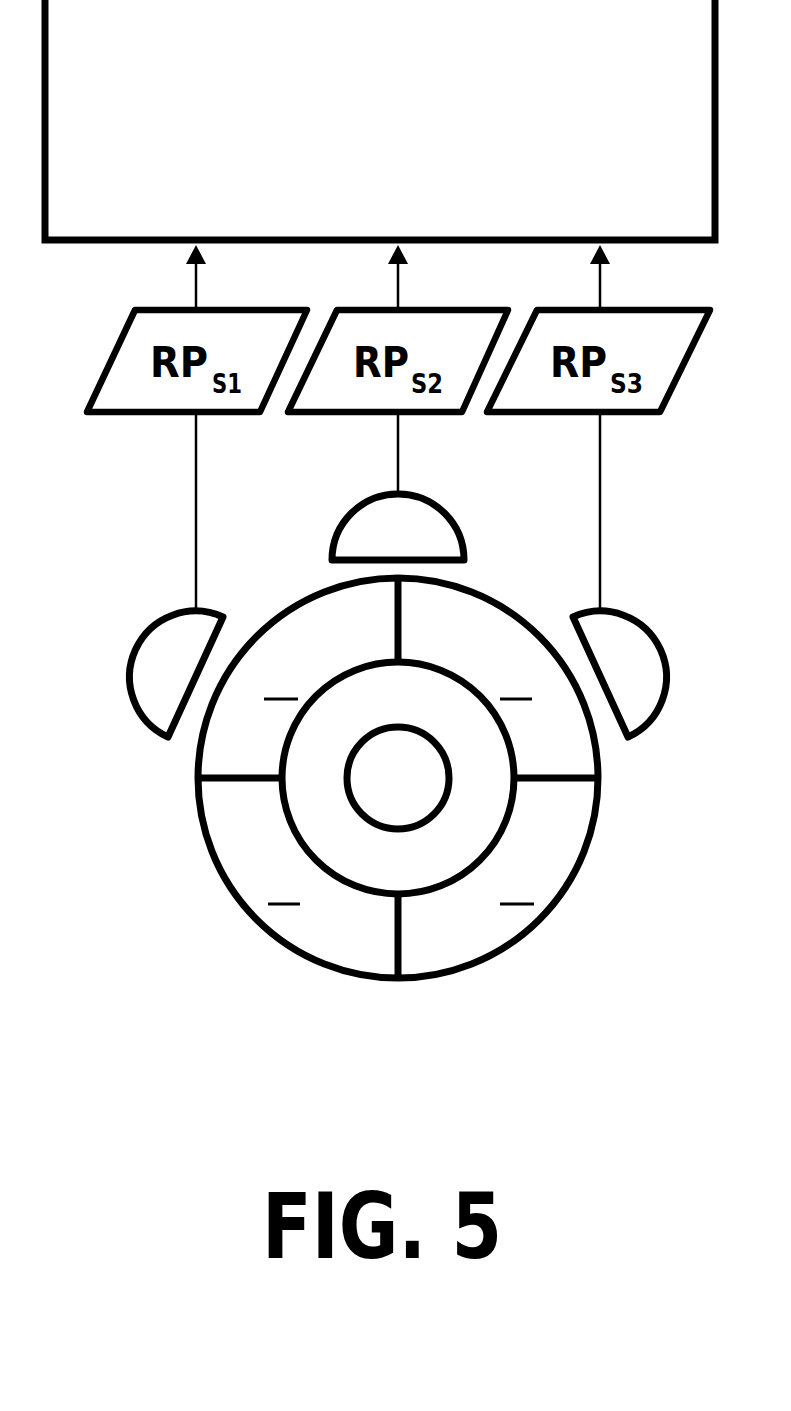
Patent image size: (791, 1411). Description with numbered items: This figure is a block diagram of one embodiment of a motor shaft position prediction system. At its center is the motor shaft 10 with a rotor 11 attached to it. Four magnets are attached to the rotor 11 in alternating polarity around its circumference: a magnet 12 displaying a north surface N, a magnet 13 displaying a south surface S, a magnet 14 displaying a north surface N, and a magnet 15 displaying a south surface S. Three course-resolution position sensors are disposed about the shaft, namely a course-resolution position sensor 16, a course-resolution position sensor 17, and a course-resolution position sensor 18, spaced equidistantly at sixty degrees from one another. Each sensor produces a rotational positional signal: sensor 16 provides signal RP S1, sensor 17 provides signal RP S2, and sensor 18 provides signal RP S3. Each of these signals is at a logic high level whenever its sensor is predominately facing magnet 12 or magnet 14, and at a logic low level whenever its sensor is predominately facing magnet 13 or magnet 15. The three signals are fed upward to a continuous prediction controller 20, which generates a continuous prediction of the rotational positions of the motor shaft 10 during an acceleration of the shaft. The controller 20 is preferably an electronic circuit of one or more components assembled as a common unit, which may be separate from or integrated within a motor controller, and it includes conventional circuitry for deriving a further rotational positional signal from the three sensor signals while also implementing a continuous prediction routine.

The motor shaft 10 is at (374, 803).
The rotor 11 is at (371, 720).
The magnet 12 is at (285, 612).
The magnet 13 is at (515, 610).
The magnet 14 is at (555, 903).
The magnet 15 is at (240, 903).
The course-resolution position sensor 16 is at (128, 647).
The course-resolution position sensor 17 is at (342, 517).
The course-resolution position sensor 18 is at (668, 650).
The continuous prediction controller 20 is at (355, 183).